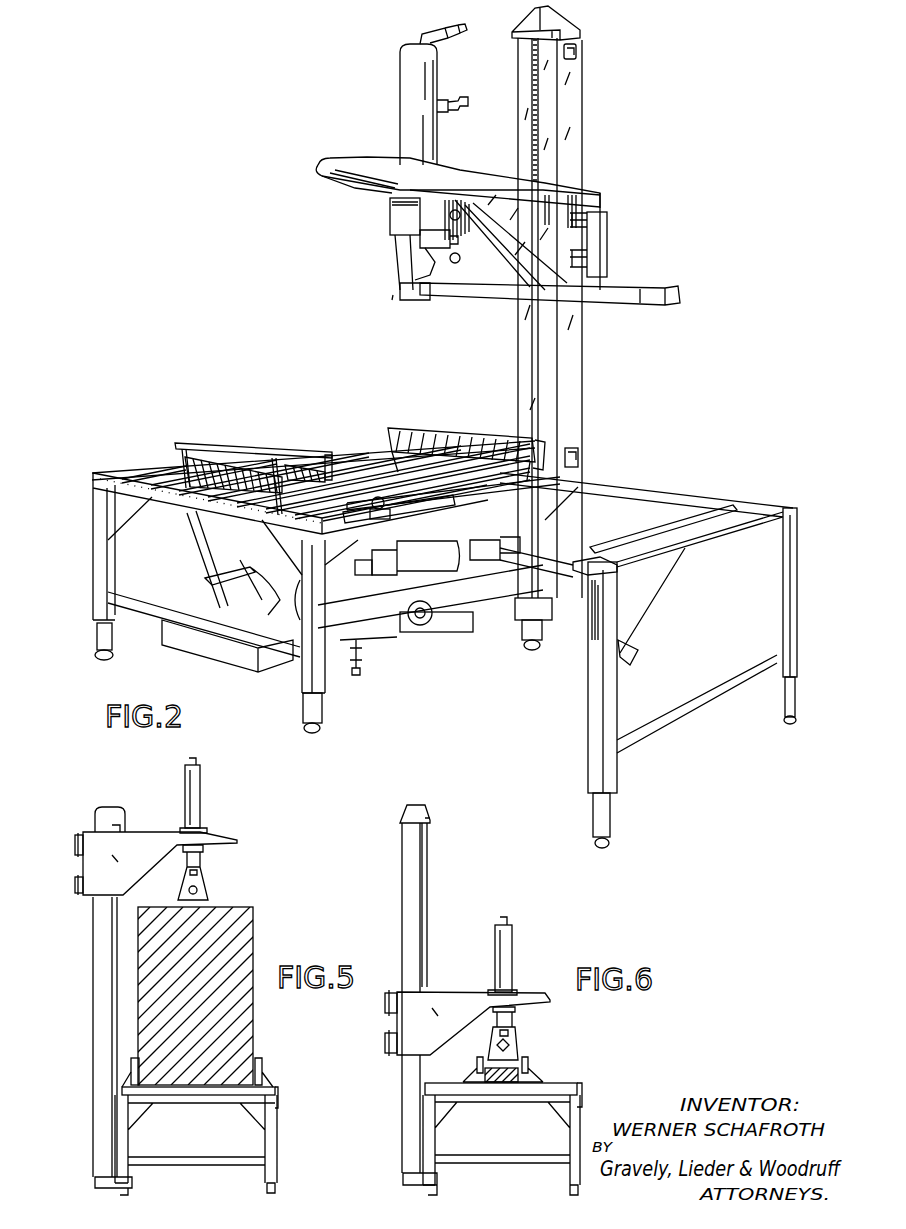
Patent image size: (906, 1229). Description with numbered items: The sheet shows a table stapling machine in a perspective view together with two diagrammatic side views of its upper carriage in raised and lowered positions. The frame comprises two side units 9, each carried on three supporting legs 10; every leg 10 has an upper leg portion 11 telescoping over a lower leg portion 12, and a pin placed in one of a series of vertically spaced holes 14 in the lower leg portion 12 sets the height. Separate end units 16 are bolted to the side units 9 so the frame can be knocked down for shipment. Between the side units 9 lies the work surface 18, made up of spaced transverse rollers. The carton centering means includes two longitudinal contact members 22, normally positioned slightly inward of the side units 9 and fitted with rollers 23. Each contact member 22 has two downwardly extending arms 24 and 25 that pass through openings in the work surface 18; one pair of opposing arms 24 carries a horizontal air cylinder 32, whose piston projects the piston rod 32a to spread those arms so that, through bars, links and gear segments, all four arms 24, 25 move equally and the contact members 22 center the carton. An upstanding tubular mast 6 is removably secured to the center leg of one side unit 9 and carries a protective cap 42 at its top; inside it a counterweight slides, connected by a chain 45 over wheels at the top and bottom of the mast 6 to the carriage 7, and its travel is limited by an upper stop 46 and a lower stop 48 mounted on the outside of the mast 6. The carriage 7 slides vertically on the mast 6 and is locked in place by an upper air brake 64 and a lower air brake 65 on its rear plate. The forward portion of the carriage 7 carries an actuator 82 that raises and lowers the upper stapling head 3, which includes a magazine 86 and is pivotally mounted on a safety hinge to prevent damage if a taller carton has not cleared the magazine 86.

In FIG. 2, the upper stapling head 3 is at (388, 267).
In FIG. 5, the upper stapling head 3 is at (212, 887).
In FIG. 6, the upper stapling head 3 is at (522, 1037).
In FIG. 2, the mast 6 is at (590, 129).
In FIG. 5, the mast 6 is at (103, 1013).
In FIG. 6, the mast 6 is at (405, 878).
In FIG. 2, the carriage 7 is at (520, 231).
In FIG. 5, the carriage 7 is at (143, 847).
In FIG. 6, the carriage 7 is at (453, 1007).
In FIG. 2, the side unit 9 is at (645, 490).
In FIG. 2, the supporting leg 10 is at (617, 710).
In FIG. 2, the upper leg portion 11 is at (115, 558).
In FIG. 2, the lower leg portion 12 is at (97, 640).
In FIG. 2, the holes 14 is at (112, 643).
In FIG. 2, the end unit 16 is at (642, 602).
In FIG. 2, the work surface 18 is at (125, 468).
In FIG. 2, the contact member 22 is at (402, 432).
In FIG. 5, the contact member 22 is at (258, 1062).
In FIG. 6, the contact member 22 is at (533, 1060).
In FIG. 2, the rollers 23 is at (463, 430).
In FIG. 2, the arm 24 is at (473, 533).
In FIG. 2, the arm 25 is at (198, 560).
In FIG. 2, the air cylinder 32 is at (442, 563).
In FIG. 2, the piston rod 32a is at (358, 573).
In FIG. 2, the protective cap 42 is at (578, 24).
In FIG. 5, the protective cap 42 is at (108, 813).
In FIG. 6, the protective cap 42 is at (423, 815).
In FIG. 5, the chain 45 is at (123, 963).
In FIG. 6, the chain 45 is at (427, 893).
In FIG. 2, the upper stop 46 is at (580, 52).
In FIG. 2, the lower stop 48 is at (582, 455).
In FIG. 5, the upper air brake 64 is at (75, 843).
In FIG. 6, the upper air brake 64 is at (385, 1007).
In FIG. 5, the lower air brake 65 is at (75, 888).
In FIG. 6, the lower air brake 65 is at (385, 1043).
In FIG. 2, the actuator 82 is at (410, 84).
In FIG. 5, the actuator 82 is at (200, 810).
In FIG. 6, the actuator 82 is at (512, 948).
In FIG. 2, the magazine 86 is at (600, 300).